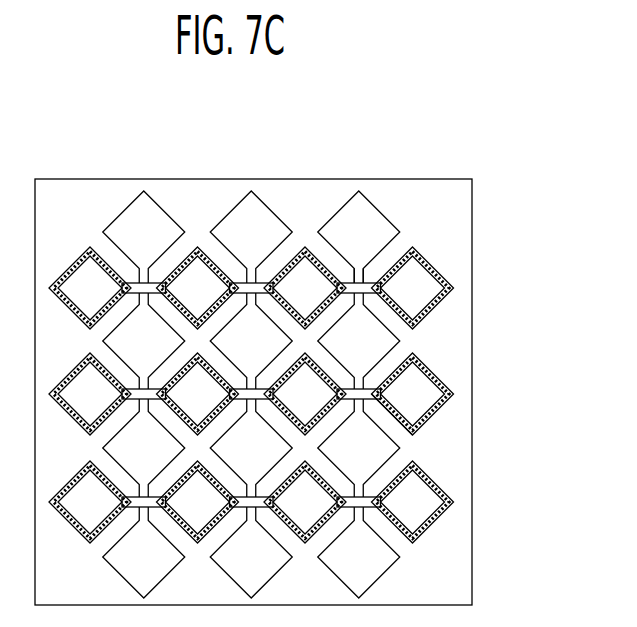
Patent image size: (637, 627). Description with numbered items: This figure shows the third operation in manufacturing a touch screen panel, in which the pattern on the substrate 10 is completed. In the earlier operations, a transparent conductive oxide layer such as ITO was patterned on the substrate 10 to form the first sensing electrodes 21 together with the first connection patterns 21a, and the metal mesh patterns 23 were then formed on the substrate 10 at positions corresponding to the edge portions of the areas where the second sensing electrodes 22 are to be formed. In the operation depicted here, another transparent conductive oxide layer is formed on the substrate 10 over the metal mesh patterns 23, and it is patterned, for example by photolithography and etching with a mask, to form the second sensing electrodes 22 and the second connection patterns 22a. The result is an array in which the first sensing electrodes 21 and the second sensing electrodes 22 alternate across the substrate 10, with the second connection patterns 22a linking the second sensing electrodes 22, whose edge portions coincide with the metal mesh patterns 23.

The substrate 10 is at (316, 193).
The first sensing electrodes 21 is at (365, 210).
The first connection patterns 21a is at (363, 277).
The second sensing electrodes 22 is at (417, 388).
The second connection patterns 22a is at (380, 410).
The metal mesh patterns 23 is at (434, 265).